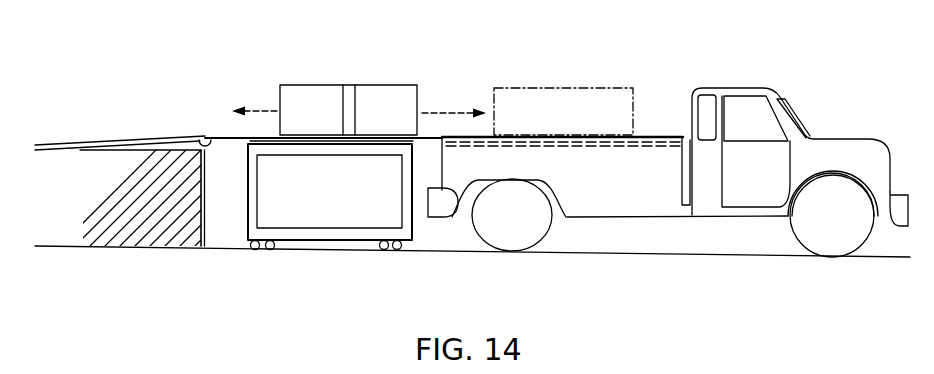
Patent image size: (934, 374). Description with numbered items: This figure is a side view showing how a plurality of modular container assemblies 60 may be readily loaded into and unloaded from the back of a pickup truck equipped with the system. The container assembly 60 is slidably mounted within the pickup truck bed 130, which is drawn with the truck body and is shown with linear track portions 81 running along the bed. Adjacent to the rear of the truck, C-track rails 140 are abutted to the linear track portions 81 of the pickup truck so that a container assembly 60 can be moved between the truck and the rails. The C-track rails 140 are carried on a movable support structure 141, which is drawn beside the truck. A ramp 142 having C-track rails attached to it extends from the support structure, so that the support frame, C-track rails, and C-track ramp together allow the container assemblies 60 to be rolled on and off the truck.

The modular container assembly 60 is at (373, 85).
The linear track portions 81 is at (577, 147).
The pickup truck bed 130 is at (637, 177).
The C-track rails 140 is at (318, 140).
The movable support structure 141 is at (258, 192).
The ramp 142 is at (157, 135).